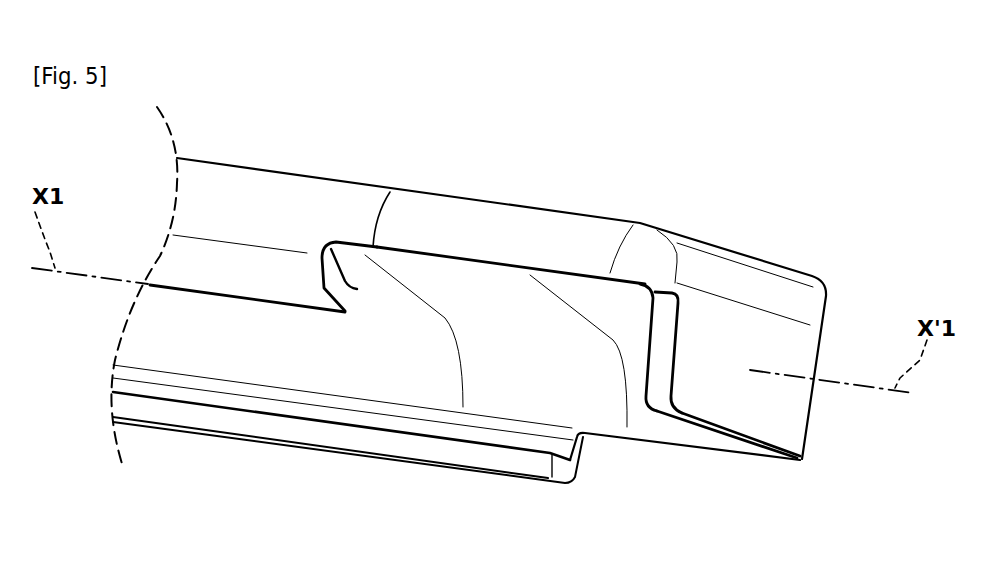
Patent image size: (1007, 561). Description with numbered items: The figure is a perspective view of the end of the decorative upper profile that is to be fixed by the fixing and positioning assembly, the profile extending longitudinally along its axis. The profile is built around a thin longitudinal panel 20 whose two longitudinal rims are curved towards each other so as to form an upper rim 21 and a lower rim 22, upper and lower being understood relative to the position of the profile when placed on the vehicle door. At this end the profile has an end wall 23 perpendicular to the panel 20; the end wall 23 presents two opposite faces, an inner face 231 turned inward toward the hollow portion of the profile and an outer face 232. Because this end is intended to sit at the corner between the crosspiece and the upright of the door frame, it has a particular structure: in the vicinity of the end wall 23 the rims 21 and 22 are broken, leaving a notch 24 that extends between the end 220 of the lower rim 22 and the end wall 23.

The thin longitudinal panel 20 is at (750, 285).
The upper rim 21 is at (563, 472).
The lower rim 22 is at (255, 290).
The end wall 23 is at (750, 343).
The notch 24 is at (505, 314).
The end of the lower rim 220 is at (342, 292).
The inner face 231 is at (645, 337).
The outer face 232 is at (771, 412).